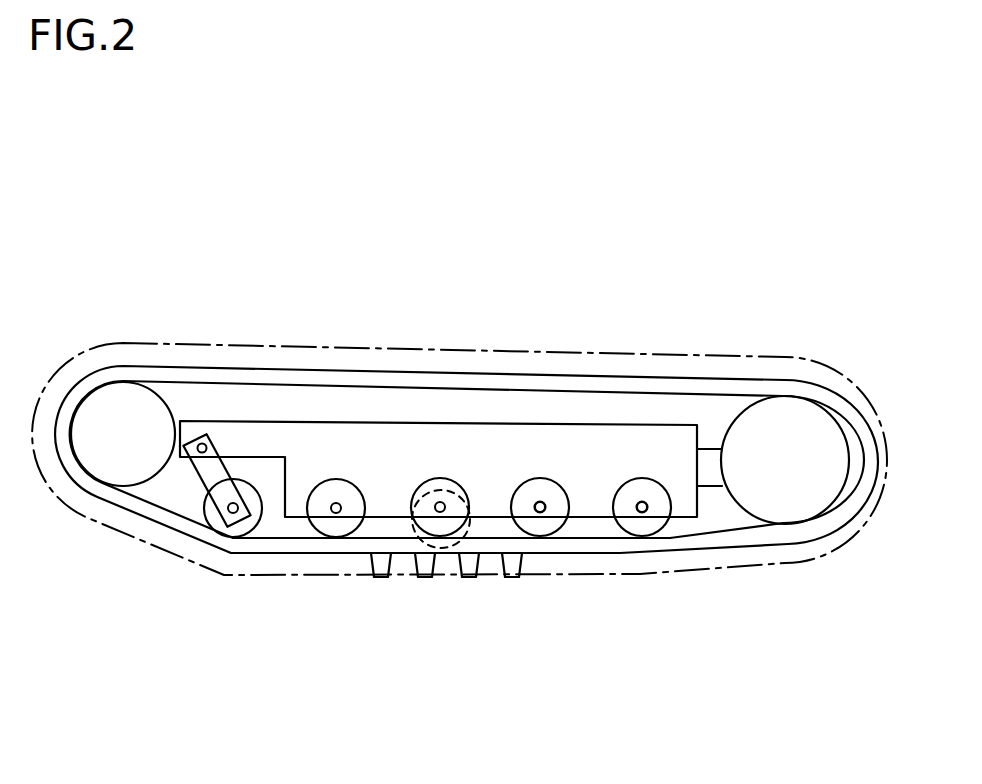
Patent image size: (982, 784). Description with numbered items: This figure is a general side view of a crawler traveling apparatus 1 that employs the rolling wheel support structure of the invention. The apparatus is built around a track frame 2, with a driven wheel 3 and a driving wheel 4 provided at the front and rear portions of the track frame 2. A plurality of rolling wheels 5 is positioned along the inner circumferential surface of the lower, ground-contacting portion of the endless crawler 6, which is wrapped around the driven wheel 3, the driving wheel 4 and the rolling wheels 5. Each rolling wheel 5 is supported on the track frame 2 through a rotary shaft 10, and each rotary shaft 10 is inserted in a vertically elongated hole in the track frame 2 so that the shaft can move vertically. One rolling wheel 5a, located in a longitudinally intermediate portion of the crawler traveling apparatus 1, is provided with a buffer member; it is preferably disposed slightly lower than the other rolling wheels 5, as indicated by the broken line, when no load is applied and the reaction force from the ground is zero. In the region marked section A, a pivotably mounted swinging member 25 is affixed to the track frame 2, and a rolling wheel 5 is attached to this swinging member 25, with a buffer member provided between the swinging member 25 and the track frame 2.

The crawler traveling apparatus 1 is at (721, 212).
The track frame 2 is at (519, 438).
The driven wheel 3 is at (767, 505).
The driving wheel 4 is at (123, 403).
The rolling wheels 5 is at (215, 527).
The rolling wheel 5a is at (455, 553).
The endless crawler 6 is at (323, 370).
The rotary shafts 10 is at (532, 510).
The swinging member 25 is at (225, 473).
The section A is at (195, 483).